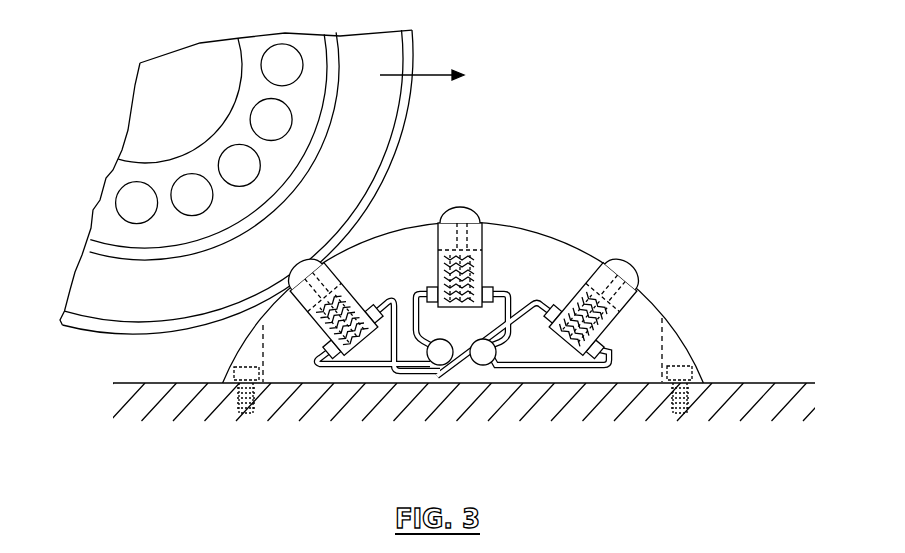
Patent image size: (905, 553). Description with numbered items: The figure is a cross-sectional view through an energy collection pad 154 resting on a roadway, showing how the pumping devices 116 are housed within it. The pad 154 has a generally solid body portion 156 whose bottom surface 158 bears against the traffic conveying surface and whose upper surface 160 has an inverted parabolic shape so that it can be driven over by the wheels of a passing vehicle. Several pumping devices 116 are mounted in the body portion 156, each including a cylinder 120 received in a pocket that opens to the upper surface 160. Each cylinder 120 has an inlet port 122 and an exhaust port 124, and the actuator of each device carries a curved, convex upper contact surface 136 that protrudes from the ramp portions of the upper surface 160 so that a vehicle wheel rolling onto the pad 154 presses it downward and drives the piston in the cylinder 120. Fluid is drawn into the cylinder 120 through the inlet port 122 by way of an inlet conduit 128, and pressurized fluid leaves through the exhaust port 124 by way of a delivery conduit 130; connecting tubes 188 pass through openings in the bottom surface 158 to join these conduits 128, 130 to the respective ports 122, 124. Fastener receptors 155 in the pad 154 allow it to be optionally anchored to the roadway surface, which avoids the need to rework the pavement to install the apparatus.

The pumping device 116 is at (413, 251).
The cylinder 120 is at (322, 266).
The inlet port 122 is at (429, 300).
The exhaust port 124 is at (379, 311).
The inlet conduit 128 is at (440, 366).
The delivery conduit 130 is at (484, 366).
The upper contact surface 136 is at (459, 206).
The energy collection pad 154 is at (503, 282).
The fastener receptors 155 is at (679, 367).
The body portion 156 is at (310, 345).
The bottom surface 158 is at (383, 384).
The upper surface 160 is at (500, 223).
The connecting tubes 188 is at (395, 340).